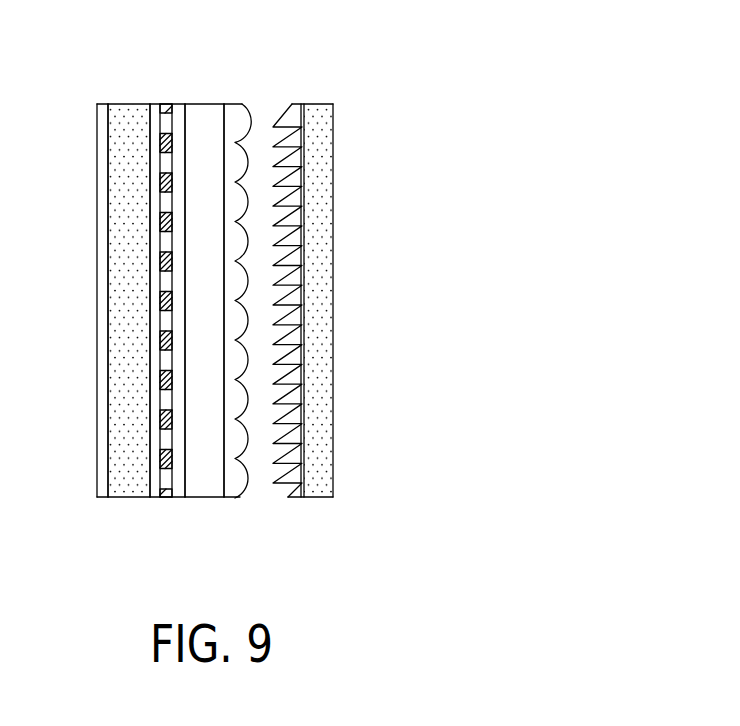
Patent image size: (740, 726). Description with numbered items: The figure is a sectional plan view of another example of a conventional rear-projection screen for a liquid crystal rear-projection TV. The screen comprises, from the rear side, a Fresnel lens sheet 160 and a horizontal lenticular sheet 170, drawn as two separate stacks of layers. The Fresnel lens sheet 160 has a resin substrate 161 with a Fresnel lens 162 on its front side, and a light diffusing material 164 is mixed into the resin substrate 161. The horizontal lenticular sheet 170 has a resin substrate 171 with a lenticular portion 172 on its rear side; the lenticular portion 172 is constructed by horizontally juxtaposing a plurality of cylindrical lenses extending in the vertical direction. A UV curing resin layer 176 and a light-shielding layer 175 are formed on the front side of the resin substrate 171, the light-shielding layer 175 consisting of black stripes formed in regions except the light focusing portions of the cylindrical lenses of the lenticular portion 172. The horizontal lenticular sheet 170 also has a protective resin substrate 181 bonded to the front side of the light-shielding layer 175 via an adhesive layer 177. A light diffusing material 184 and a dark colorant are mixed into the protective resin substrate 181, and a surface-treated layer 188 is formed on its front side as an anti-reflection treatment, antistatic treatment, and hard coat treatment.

The Fresnel lens sheet 160 is at (320, 88).
The resin substrate 161 is at (318, 492).
The Fresnel lens 162 is at (295, 487).
The light diffusing material 164 is at (322, 467).
The horizontal lenticular sheet 170 is at (166, 88).
The resin substrate 171 is at (207, 490).
The lenticular portion 172 is at (235, 487).
The light-shielding layer 175 is at (167, 498).
The UV curing resin layer 176 is at (182, 498).
The adhesive layer 177 is at (155, 498).
The protective resin substrate 181 is at (123, 498).
The light diffusing material 184 is at (107, 500).
The surface-treated layer 188 is at (100, 477).